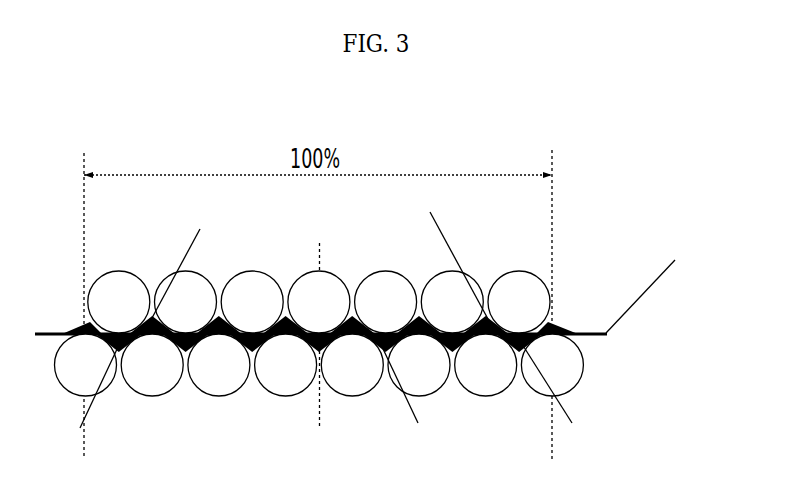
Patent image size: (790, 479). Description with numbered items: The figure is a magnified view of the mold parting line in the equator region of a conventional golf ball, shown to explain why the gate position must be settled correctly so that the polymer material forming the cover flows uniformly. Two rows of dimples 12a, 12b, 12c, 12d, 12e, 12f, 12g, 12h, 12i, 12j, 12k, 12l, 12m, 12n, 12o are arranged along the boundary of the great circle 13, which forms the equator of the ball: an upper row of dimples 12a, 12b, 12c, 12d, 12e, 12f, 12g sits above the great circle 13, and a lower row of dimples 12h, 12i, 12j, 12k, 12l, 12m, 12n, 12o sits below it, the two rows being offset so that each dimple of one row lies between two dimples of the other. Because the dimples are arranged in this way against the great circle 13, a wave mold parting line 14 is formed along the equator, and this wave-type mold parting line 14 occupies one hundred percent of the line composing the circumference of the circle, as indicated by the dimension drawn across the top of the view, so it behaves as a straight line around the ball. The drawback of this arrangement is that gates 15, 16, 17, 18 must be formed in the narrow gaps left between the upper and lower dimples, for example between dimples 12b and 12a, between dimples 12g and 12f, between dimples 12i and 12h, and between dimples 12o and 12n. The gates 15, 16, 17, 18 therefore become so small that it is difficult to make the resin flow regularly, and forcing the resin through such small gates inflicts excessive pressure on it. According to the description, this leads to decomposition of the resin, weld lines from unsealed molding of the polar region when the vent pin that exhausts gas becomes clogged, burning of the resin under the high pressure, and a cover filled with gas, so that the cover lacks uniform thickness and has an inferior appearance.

The dimple 12a is at (519, 302).
The dimple 12b is at (452, 302).
The dimple 12c is at (386, 302).
The dimple 12d is at (319, 302).
The dimple 12e is at (252, 302).
The dimple 12f is at (186, 302).
The dimple 12g is at (119, 302).
The dimple 12h is at (552, 365).
The dimple 12i is at (486, 365).
The dimple 12j is at (419, 365).
The dimple 12k is at (352, 365).
The dimple 12l is at (286, 365).
The dimple 12m is at (219, 365).
The dimple 12n is at (152, 365).
The dimple 12o is at (86, 365).
The great circle 13 is at (386, 291).
The wave mold parting line 14 is at (418, 386).
The gate 15 is at (445, 267).
The gate 16 is at (187, 276).
The gate 17 is at (557, 386).
The gate 18 is at (87, 390).